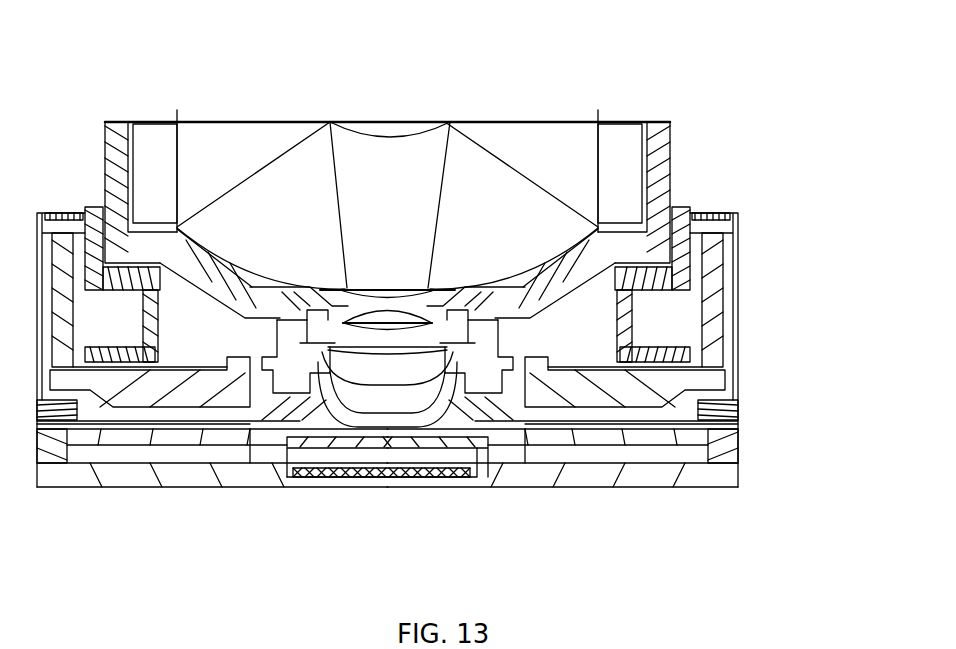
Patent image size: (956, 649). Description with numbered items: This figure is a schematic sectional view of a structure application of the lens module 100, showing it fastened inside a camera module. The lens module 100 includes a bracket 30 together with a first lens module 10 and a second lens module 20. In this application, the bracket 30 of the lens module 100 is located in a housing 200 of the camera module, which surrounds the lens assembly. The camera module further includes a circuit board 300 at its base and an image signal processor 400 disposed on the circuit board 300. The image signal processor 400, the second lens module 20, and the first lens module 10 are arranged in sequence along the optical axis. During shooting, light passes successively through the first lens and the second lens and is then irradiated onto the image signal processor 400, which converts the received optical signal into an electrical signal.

The lens module 100 is at (506, 106).
The first lens module 10 is at (112, 163).
The second lens module 20 is at (300, 397).
The bracket 30 is at (673, 207).
The housing 200 is at (722, 217).
The circuit board 300 is at (497, 477).
The image signal processor 400 is at (367, 483).